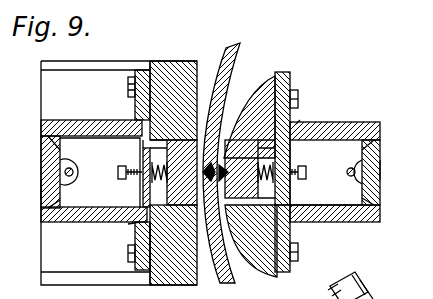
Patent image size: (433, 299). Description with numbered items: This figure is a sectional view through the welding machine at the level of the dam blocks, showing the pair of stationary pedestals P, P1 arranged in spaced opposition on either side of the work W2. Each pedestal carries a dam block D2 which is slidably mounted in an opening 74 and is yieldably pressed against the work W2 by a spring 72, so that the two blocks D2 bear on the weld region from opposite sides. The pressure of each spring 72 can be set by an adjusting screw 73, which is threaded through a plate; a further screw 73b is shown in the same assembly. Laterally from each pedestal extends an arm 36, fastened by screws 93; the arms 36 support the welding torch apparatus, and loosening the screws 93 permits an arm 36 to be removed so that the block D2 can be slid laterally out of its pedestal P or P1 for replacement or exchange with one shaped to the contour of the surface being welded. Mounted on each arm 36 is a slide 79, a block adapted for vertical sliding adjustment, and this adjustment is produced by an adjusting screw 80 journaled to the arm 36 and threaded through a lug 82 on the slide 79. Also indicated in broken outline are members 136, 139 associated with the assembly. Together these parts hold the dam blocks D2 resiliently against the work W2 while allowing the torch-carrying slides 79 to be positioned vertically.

The arm 36 is at (64, 120).
The spring 72 is at (140, 160).
The adjusting screw 73 is at (126, 170).
The screw 73b is at (336, 74).
The opening 74 is at (160, 140).
The slide 79 is at (41, 186).
The adjusting screw 80 is at (64, 171).
The lug 82 is at (60, 152).
The screw 93 is at (130, 77).
The member 136 is at (375, 297).
The member 139 is at (362, 283).
The stationary pedestal P is at (160, 61).
The stationary pedestal P1 is at (284, 72).
The dam block D2 is at (187, 130).
The work W2 is at (238, 283).